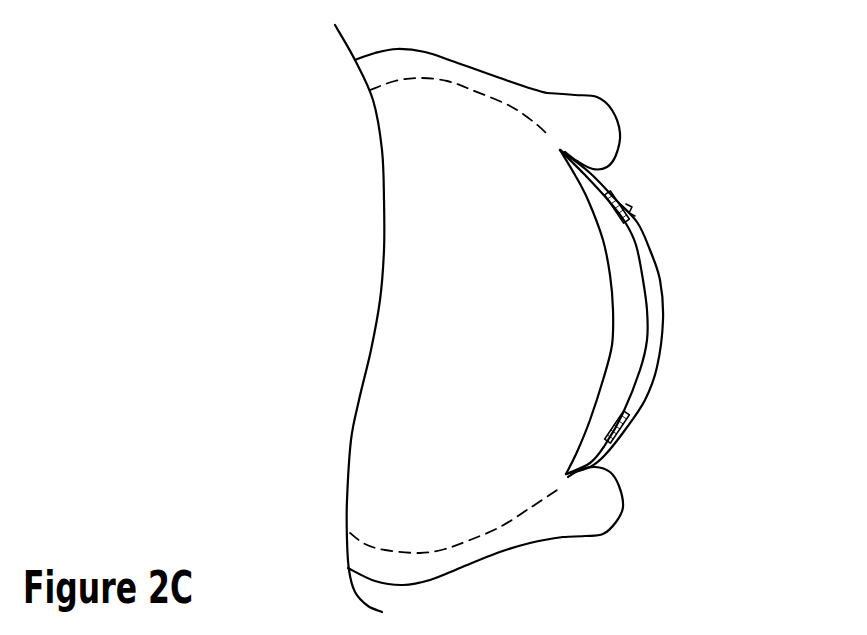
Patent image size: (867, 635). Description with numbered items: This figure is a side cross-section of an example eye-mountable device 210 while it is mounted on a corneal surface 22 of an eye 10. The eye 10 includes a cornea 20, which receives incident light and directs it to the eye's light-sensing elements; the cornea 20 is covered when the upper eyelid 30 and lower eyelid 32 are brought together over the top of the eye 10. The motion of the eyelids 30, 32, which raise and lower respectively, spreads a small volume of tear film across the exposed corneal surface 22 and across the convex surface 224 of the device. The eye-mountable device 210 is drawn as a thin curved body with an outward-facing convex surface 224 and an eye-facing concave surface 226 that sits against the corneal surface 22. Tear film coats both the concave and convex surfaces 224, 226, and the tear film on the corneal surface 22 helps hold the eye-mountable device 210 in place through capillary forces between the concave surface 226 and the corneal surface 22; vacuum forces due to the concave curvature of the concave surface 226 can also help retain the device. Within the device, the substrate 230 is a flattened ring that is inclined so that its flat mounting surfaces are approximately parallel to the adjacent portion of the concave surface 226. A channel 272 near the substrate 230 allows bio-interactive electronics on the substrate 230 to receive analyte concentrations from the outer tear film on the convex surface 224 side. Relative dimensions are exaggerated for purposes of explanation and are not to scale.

The eye 10 is at (523, 323).
The cornea 20 is at (647, 312).
The corneal surface 22 is at (647, 312).
The upper eyelid 30 is at (618, 118).
The lower eyelid 32 is at (622, 490).
The eye-mountable device 210 is at (647, 312).
The convex surface 224 is at (660, 263).
The concave surface 226 is at (645, 312).
The substrate 230 is at (642, 229).
The channel 272 is at (628, 212).